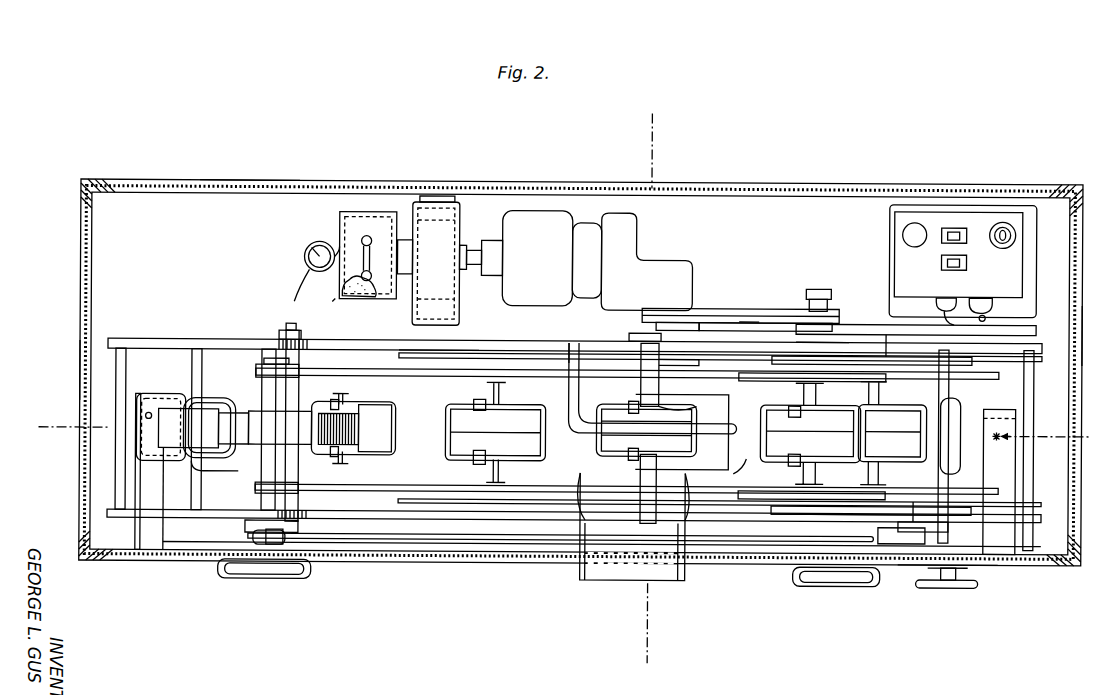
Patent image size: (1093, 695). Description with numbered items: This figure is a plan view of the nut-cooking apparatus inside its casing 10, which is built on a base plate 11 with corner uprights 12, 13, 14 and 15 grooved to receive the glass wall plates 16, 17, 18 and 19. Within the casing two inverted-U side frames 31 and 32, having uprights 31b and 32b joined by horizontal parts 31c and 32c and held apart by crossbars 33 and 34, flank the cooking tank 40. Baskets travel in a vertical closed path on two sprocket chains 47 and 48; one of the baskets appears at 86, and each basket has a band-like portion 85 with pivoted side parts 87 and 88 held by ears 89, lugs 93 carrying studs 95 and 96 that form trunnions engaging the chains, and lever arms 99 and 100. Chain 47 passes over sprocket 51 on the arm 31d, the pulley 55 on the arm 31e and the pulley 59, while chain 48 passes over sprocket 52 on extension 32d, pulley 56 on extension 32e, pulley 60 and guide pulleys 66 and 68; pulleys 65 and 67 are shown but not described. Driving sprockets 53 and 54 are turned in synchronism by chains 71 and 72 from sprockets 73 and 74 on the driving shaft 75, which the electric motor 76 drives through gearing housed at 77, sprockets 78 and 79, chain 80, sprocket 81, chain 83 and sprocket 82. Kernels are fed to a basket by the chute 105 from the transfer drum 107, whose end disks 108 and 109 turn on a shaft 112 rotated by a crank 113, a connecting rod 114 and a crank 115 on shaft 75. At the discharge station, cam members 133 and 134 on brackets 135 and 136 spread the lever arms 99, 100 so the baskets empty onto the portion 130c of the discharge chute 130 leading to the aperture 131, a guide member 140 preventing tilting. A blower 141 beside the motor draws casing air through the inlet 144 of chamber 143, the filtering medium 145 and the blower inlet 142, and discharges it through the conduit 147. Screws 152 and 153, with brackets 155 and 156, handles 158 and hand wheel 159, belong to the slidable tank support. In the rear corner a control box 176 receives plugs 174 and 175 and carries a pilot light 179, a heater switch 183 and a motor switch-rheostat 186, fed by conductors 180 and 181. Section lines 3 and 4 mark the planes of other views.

The casing 10 is at (991, 183).
The base plate 11 is at (205, 263).
The upright 12 is at (88, 186).
The upright 13 is at (1076, 185).
The upright 14 is at (1068, 569).
The upright 15 is at (84, 562).
The plate-like member 16 is at (236, 179).
The plate-like member 17 is at (1070, 326).
The plate member 18 is at (972, 562).
The plate-like member 19 is at (80, 370).
The side frame 31 is at (174, 520).
The upright of side frame 31b is at (340, 516).
The horizontal frame part 31c is at (490, 530).
The upstanding arm 31d is at (823, 514).
The upstanding arm 31e is at (635, 467).
The side frame 32 is at (166, 336).
The upright of side frame 32b is at (322, 342).
The horizontal frame part 32c is at (468, 347).
The frame extension 32d is at (836, 342).
The upstanding frame extension 32e is at (641, 360).
The crossbar 33 is at (118, 412).
The crossbar 34 is at (1032, 396).
The cooking tank 40 is at (957, 470).
The chain 47 is at (427, 484).
The chain 48 is at (627, 387).
The sprocket 51 is at (783, 483).
The driven sprocket 52 is at (780, 379).
The driving sprocket 53 is at (777, 512).
The driving sprocket 54 is at (762, 360).
The guide and supporting pulley 55 is at (645, 515).
The guide and supporting pulley 56 is at (640, 392).
The pulley 59 is at (250, 483).
The pulley 60 is at (262, 370).
The lower pin 65 is at (815, 482).
The guide pulley 66 is at (815, 388).
The lower pin 67 is at (887, 482).
The guide pulley 68 is at (882, 382).
The chain 71 is at (917, 503).
The chain 72 is at (893, 352).
The sprocket 73 is at (940, 518).
The sprocket 74 is at (967, 368).
The driving shaft 75 is at (950, 385).
The electric motor 76 is at (537, 258).
The reduction gearing housing 77 is at (645, 260).
The sprocket 78 is at (690, 307).
The sprocket 79 is at (808, 300).
The chain 80 is at (758, 306).
The sprocket 81 is at (396, 432).
The sprocket 82 is at (1045, 300).
The chain 83 is at (882, 324).
The band-like portion 85 is at (690, 402).
The cartridge box 86 is at (892, 433).
The basket part 87 is at (810, 436).
The basket part 88 is at (739, 455).
The ears 89 is at (550, 476).
The lug 93 is at (510, 448).
The stud 95 is at (348, 473).
The stud 96 is at (350, 392).
The basket lever 99 is at (336, 460).
The basket lever 100 is at (634, 406).
The chute 105 is at (150, 411).
The transfer drum 107 is at (220, 428).
The end disk member 108 is at (238, 440).
The end disk member 109 is at (279, 427).
The shaft 112 is at (300, 390).
The crank 113 is at (250, 527).
The connecting rod 114 is at (460, 540).
The crank 115 is at (928, 584).
The discharge chute 130 is at (673, 574).
The chute portion 130c is at (593, 414).
The aperture 131 is at (590, 560).
The cam member 133 is at (655, 450).
The cam member 134 is at (678, 410).
The bracket 135 is at (690, 503).
The bracket 136 is at (661, 360).
The rod-like guide member 140 is at (364, 210).
The blower 141 is at (468, 222).
The blower inlet 142 is at (404, 272).
The chamber 143 is at (336, 300).
The chamber inlet 144 is at (311, 268).
The filtering medium 145 is at (361, 297).
The outlet conduit 147 is at (429, 200).
The screw 152 is at (156, 374).
The screw 153 is at (1019, 428).
The bracket 155 is at (143, 528).
The bracket 156 is at (1003, 466).
The handles 158 is at (240, 579).
The hand wheel 159 is at (982, 579).
The plug 174 is at (958, 298).
The plug 175 is at (991, 303).
The control box 176 is at (933, 207).
The pilot light 179 is at (915, 243).
The conductor 180 is at (1010, 227).
The conductor 181 is at (1010, 237).
The switch 183 is at (968, 228).
The switch 186 is at (968, 260).
The section line 3- 3 is at (58, 437).
The section line 4- 4 is at (652, 148).